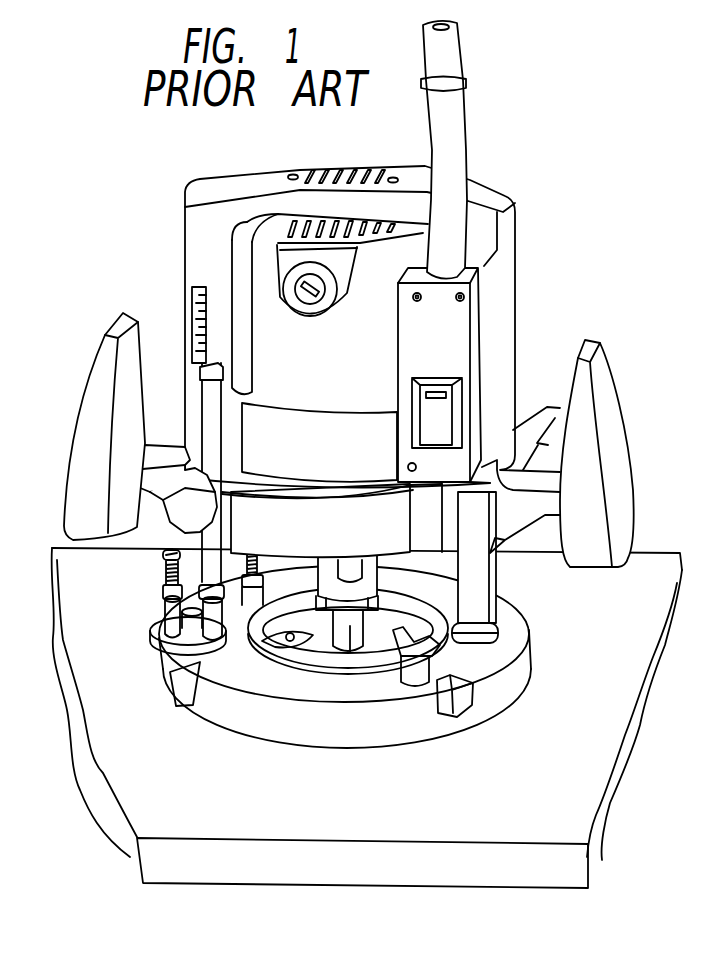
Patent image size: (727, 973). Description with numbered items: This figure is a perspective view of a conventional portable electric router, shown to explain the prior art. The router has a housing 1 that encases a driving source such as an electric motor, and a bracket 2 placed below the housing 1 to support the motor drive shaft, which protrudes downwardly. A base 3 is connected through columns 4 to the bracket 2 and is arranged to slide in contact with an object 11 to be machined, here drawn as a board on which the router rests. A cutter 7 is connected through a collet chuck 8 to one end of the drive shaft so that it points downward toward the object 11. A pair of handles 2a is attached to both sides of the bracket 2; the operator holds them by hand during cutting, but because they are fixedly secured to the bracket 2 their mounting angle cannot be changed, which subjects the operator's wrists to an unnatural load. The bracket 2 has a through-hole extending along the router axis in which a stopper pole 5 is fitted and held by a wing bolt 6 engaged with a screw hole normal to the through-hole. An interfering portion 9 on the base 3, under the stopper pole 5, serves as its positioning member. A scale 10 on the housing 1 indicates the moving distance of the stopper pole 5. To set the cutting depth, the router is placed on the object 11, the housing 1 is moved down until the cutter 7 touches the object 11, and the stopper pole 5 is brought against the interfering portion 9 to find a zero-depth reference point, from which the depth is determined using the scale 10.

The housing 1 is at (182, 231).
The bracket 2 is at (373, 545).
The handles 2a is at (100, 372).
The base 3 is at (487, 692).
The columns 4 is at (487, 577).
The stopper pole 5 is at (164, 559).
The wing bolt 6 is at (184, 517).
The cutter 7 is at (357, 653).
The collet chuck 8 is at (317, 597).
The interfering portion 9 is at (213, 640).
The scale 10 is at (194, 303).
The object to be machined 11 is at (503, 832).